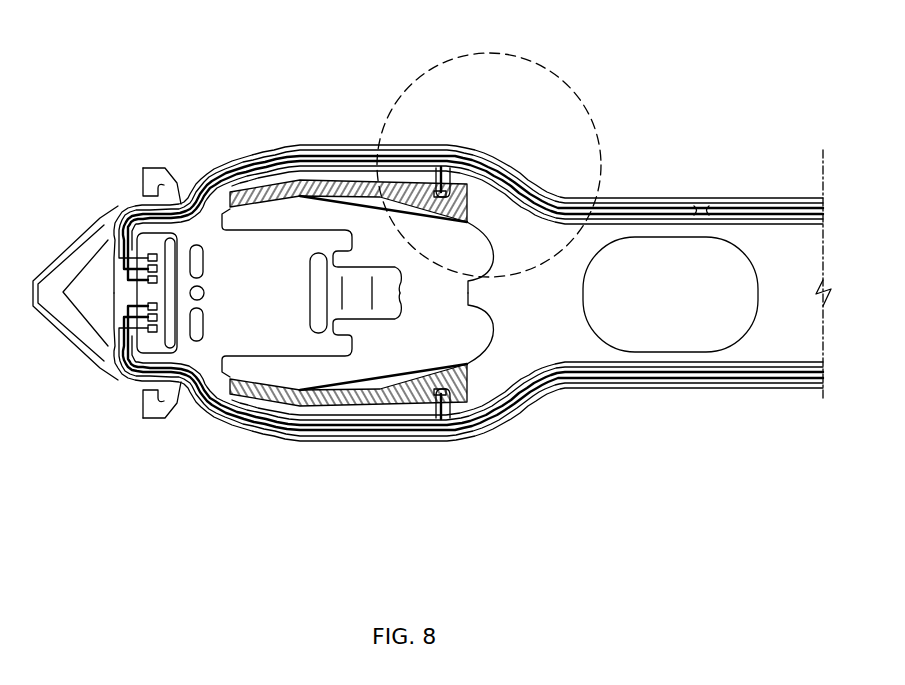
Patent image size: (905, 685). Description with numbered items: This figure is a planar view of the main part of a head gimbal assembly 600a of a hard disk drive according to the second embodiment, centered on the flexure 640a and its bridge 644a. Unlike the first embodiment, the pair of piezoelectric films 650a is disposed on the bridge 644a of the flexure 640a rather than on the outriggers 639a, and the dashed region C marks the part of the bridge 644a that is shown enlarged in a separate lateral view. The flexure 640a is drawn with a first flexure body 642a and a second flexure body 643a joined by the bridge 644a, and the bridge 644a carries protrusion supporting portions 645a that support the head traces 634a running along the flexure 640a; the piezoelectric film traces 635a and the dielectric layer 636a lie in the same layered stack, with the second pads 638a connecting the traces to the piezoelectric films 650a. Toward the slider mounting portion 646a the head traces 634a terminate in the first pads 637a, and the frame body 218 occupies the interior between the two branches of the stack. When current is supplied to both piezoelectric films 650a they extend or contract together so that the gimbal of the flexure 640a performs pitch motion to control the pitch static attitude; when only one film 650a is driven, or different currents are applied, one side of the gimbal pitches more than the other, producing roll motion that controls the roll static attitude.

The connector assembly 600a is at (78, 60).
The outer conductive layer 634a is at (222, 168).
The intermediate conductive layer 635a is at (500, 172).
The inner conductive layer 636a is at (530, 182).
The piezoelectric films 650a is at (320, 180).
The insulating member 638a is at (432, 186).
The upper contact pin 645a is at (446, 170).
The bridge 644a is at (437, 414).
The frame body 218 is at (442, 303).
The upper terminal pads 646a is at (142, 260).
The lower terminal pads 637a is at (120, 343).
The fixing tab 642a is at (180, 398).
The opening 643a is at (665, 353).
The part C is at (490, 52).
The outriggers 639a is at (553, 453).
The flexure 640a is at (668, 521).